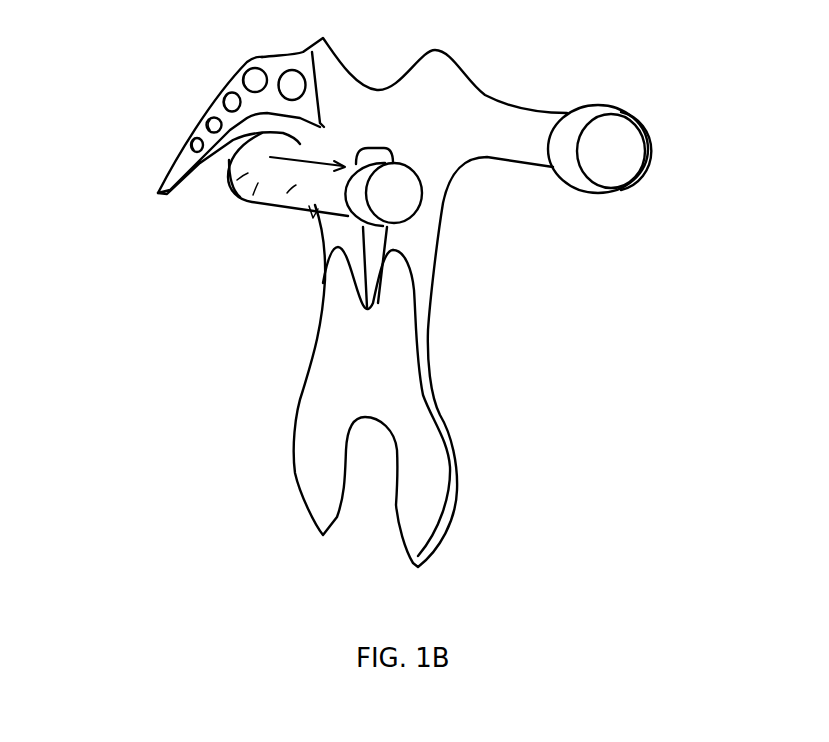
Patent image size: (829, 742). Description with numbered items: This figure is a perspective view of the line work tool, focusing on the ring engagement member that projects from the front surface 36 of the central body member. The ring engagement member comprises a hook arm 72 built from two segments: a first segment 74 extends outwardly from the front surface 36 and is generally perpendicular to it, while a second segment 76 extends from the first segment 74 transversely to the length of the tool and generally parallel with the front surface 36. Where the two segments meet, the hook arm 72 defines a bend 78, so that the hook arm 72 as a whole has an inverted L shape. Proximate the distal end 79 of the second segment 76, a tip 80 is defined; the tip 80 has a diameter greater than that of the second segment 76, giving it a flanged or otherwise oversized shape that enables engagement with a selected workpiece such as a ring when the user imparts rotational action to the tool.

The front surface 36 is at (418, 245).
The first segment 74 is at (236, 142).
The hook arm 72 is at (259, 190).
The bend 78 is at (247, 176).
The second segment 76 is at (295, 188).
The distal end 79 is at (313, 212).
The tip 80 is at (400, 193).